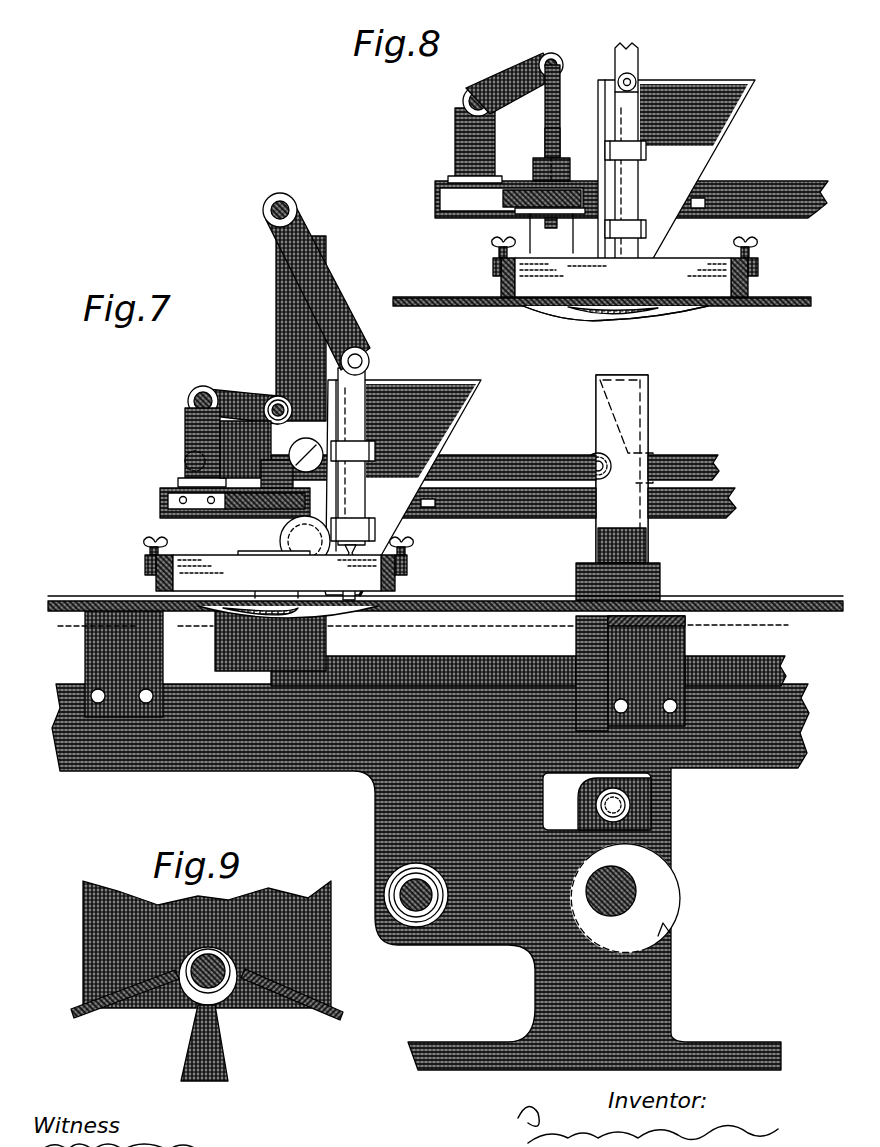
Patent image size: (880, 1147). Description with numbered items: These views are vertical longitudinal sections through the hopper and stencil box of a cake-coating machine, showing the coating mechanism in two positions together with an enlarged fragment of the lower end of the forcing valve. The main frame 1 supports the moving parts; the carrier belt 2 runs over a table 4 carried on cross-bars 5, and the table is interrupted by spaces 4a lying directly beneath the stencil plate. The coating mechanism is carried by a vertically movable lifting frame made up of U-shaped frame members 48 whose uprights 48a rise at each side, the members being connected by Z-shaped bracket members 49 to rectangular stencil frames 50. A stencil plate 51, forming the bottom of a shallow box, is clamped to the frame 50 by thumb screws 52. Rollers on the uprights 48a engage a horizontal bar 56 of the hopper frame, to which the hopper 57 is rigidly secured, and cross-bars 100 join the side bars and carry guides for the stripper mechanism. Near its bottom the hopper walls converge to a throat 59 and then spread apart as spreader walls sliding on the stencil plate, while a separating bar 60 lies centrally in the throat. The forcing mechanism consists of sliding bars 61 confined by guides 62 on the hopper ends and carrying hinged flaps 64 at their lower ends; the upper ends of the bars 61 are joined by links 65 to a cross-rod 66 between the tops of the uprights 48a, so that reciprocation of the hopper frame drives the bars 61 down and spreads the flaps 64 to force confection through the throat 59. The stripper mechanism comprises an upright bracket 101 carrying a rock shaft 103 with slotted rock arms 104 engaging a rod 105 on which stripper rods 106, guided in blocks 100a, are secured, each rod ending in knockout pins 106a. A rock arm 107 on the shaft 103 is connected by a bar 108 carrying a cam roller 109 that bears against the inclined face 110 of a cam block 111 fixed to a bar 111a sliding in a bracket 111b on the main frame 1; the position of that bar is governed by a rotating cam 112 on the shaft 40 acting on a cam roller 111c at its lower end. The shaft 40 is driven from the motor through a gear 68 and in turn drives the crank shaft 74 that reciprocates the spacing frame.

In FIG. 7, the main frame 1 is at (288, 760).
In FIG. 8, the carrier belt 2 is at (768, 284).
In FIG. 7, the carrier belt 2 is at (60, 580).
In FIG. 8, the table 4 is at (485, 296).
In FIG. 7, the table 4 is at (50, 598).
In FIG. 7, the spaces 4a is at (328, 604).
In FIG. 7, the cross-bars 5 is at (78, 636).
In FIG. 7, the shaft 40 is at (625, 878).
In FIG. 7, the U-shaped frame members 48 is at (366, 652).
In FIG. 7, the uprights 48a is at (270, 322).
In FIG. 7, the Z-shaped web or bracket members 49 is at (207, 650).
In FIG. 8, the stencil frame 50 is at (492, 274).
In FIG. 7, the stencil frame 50 is at (148, 575).
In FIG. 8, the stencil plate 51 is at (566, 290).
In FIG. 7, the stencil plate 51 is at (218, 586).
In FIG. 8, the thumb screws 52 is at (484, 238).
In FIG. 7, the thumb screws 52 is at (146, 530).
In FIG. 8, the horizontal bar 56 is at (433, 205).
In FIG. 7, the horizontal bar 56 is at (152, 485).
In FIG. 8, the hopper 57 is at (709, 82).
In FIG. 7, the hopper 57 is at (446, 382).
In FIG. 8, the throat 59 is at (622, 276).
In FIG. 7, the throat 59 is at (350, 550).
In FIG. 8, the separating bar 60 is at (625, 285).
In FIG. 7, the separating bar 60 is at (350, 585).
In FIG. 8, the sliding bars 61 is at (618, 178).
In FIG. 7, the sliding bars 61 is at (343, 378).
In FIG. 9, the sliding bars 61 is at (313, 947).
In FIG. 8, the guides 62 is at (640, 144).
In FIG. 7, the guides 62 is at (345, 500).
In FIG. 8, the flaps 64 is at (640, 264).
In FIG. 7, the flaps 64 is at (368, 565).
In FIG. 9, the flaps 64 is at (78, 1004).
In FIG. 8, the links 65 is at (626, 60).
In FIG. 7, the links 65 is at (322, 300).
In FIG. 7, the cross-rod 66 is at (290, 204).
In FIG. 9, the gear 68 is at (170, 990).
In FIG. 7, the crank shaft 74 is at (385, 900).
In FIG. 8, the cross-bars 100 is at (510, 176).
In FIG. 7, the cross-bars 100 is at (240, 508).
In FIG. 8, the blocks 100a is at (553, 146).
In FIG. 7, the blocks 100a is at (300, 436).
In FIG. 8, the upright bracket 101 is at (447, 142).
In FIG. 7, the upright bracket 101 is at (172, 468).
In FIG. 8, the rock shaft 103 is at (471, 84).
In FIG. 7, the rock shaft 103 is at (197, 378).
In FIG. 8, the rock arms 104 is at (506, 58).
In FIG. 7, the rock arms 104 is at (232, 388).
In FIG. 8, the rod 105 is at (552, 52).
In FIG. 7, the rod 105 is at (268, 388).
In FIG. 8, the stripper rods 106 is at (555, 80).
In FIG. 7, the stripper rods 106 is at (272, 532).
In FIG. 8, the knockout pins 106a is at (545, 222).
In FIG. 7, the knockout pins 106a is at (250, 543).
In FIG. 7, the rock arm 107 is at (177, 435).
In FIG. 7, the bar 108 is at (490, 438).
In FIG. 7, the cam roller 109 is at (580, 450).
In FIG. 7, the inclined face 110 is at (596, 430).
In FIG. 7, the cam block 111 is at (588, 393).
In FIG. 7, the bar 111a is at (642, 530).
In FIG. 7, the bracket 111b is at (652, 580).
In FIG. 7, the cam roller 111c is at (640, 803).
In FIG. 7, the rotating cam 112 is at (672, 905).